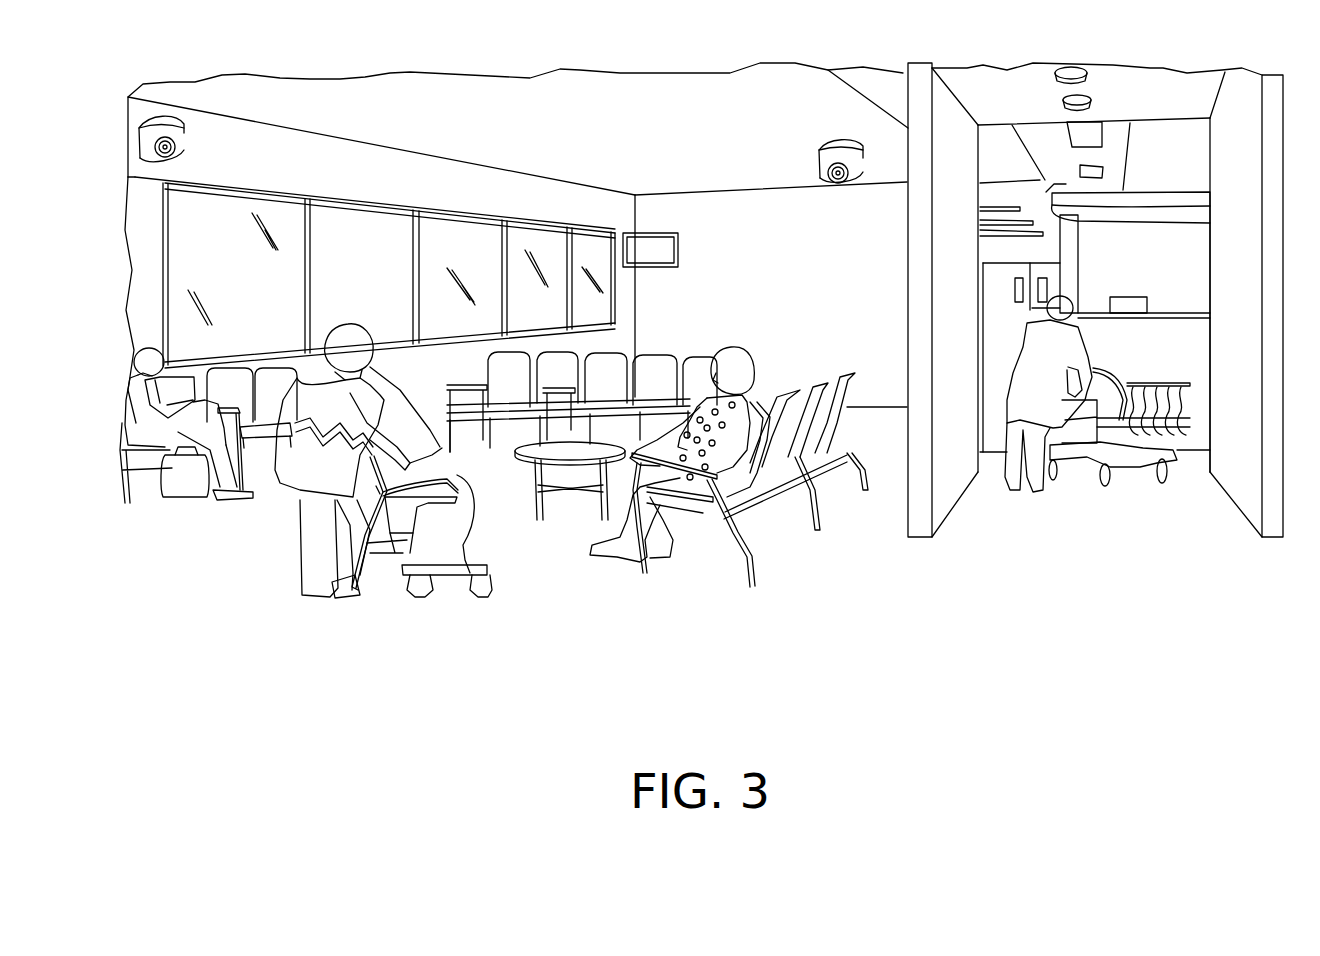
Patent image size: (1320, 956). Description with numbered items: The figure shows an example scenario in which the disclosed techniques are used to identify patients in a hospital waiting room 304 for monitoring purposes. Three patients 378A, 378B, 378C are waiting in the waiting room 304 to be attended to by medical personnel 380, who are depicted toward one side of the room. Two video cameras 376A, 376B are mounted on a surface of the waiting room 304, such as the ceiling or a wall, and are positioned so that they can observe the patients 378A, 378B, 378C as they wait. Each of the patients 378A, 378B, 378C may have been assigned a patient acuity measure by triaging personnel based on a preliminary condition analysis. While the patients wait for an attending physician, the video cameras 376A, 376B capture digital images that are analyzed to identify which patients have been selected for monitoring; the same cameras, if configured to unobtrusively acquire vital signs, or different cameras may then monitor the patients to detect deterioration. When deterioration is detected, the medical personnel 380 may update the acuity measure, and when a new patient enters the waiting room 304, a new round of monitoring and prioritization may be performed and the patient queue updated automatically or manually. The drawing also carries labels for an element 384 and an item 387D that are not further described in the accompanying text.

The waiting room 304 is at (503, 635).
The video camera 376A is at (185, 143).
The video camera 376B is at (818, 157).
The patient 378A is at (232, 500).
The patient 378B is at (349, 322).
The patient 378C is at (613, 548).
The medical personnel 380 is at (1080, 340).
The hallway 384 is at (1206, 282).
The equipment cart 387D is at (1097, 367).